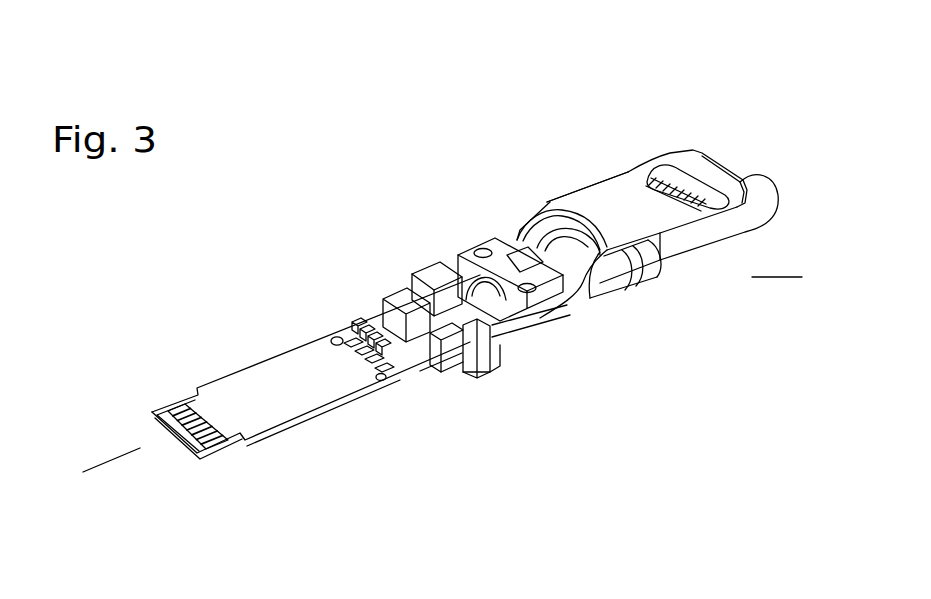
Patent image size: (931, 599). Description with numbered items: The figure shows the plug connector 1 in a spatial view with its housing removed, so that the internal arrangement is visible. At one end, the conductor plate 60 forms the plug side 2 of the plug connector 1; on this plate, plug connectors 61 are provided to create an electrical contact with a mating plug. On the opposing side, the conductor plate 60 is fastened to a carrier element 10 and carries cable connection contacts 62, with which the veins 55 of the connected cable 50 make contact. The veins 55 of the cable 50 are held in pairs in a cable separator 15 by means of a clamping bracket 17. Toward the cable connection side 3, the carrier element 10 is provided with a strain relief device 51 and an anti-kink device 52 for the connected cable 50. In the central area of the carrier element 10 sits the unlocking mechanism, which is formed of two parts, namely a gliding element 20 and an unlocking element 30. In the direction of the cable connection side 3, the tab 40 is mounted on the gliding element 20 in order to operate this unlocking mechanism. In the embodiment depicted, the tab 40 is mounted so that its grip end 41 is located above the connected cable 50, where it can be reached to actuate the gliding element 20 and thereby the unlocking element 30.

The plug connector 1 is at (356, 118).
The plug side 2 is at (140, 448).
The cable connection side 3 is at (752, 277).
The carrier element 10 is at (508, 222).
The cable separator 15 is at (465, 422).
The clamping bracket 17 is at (372, 322).
The gliding element 20 is at (533, 343).
The unlocking element 30 is at (492, 372).
The tab 40 is at (588, 130).
The grip end 41 is at (694, 152).
The cable 50 is at (760, 192).
The strain relief device 51 is at (475, 242).
The anti-kink device 52 is at (622, 278).
The veins 55 is at (402, 377).
The conductor plate 60 is at (220, 398).
The plug connectors 61 is at (175, 437).
The cable connection contacts 62 is at (348, 330).